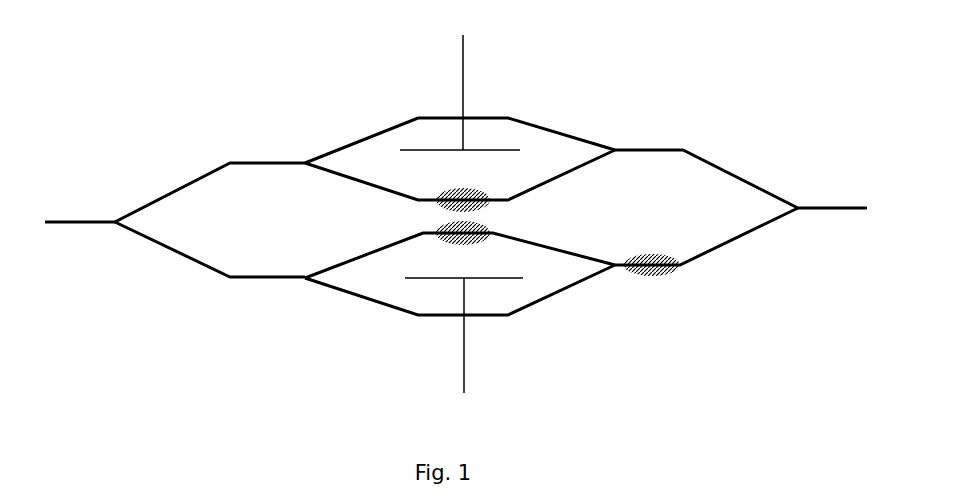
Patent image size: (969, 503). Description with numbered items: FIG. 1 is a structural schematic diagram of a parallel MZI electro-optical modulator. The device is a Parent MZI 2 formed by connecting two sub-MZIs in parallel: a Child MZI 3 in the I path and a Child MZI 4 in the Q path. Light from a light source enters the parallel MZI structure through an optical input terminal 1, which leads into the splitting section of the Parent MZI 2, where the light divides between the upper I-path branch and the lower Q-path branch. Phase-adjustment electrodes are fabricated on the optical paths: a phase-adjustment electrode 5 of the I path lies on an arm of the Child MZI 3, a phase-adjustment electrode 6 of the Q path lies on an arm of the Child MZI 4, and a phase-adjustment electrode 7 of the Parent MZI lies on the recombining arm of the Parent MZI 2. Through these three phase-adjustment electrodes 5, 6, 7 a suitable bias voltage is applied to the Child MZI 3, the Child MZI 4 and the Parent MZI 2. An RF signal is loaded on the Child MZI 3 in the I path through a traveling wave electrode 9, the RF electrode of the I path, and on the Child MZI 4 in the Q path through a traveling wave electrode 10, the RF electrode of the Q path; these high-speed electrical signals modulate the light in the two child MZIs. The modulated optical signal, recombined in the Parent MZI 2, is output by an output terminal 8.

The optical input terminal 1 is at (72, 222).
The Parent MZI 2 is at (210, 220).
The Child MZI in I path 3 is at (460, 159).
The Child MZI in Q path 4 is at (460, 274).
The phase-adjustment electrode of I path 5 is at (472, 190).
The phase-adjustment electrode of Q path 6 is at (472, 246).
The phase-adjustment electrode of the Parent MZI 7 is at (652, 251).
The output terminal 8 is at (750, 207).
The traveling wave electrode (RF electrode of I path) 9 is at (460, 77).
The traveling wave electrode (RF electrode of Q path) 10 is at (464, 350).